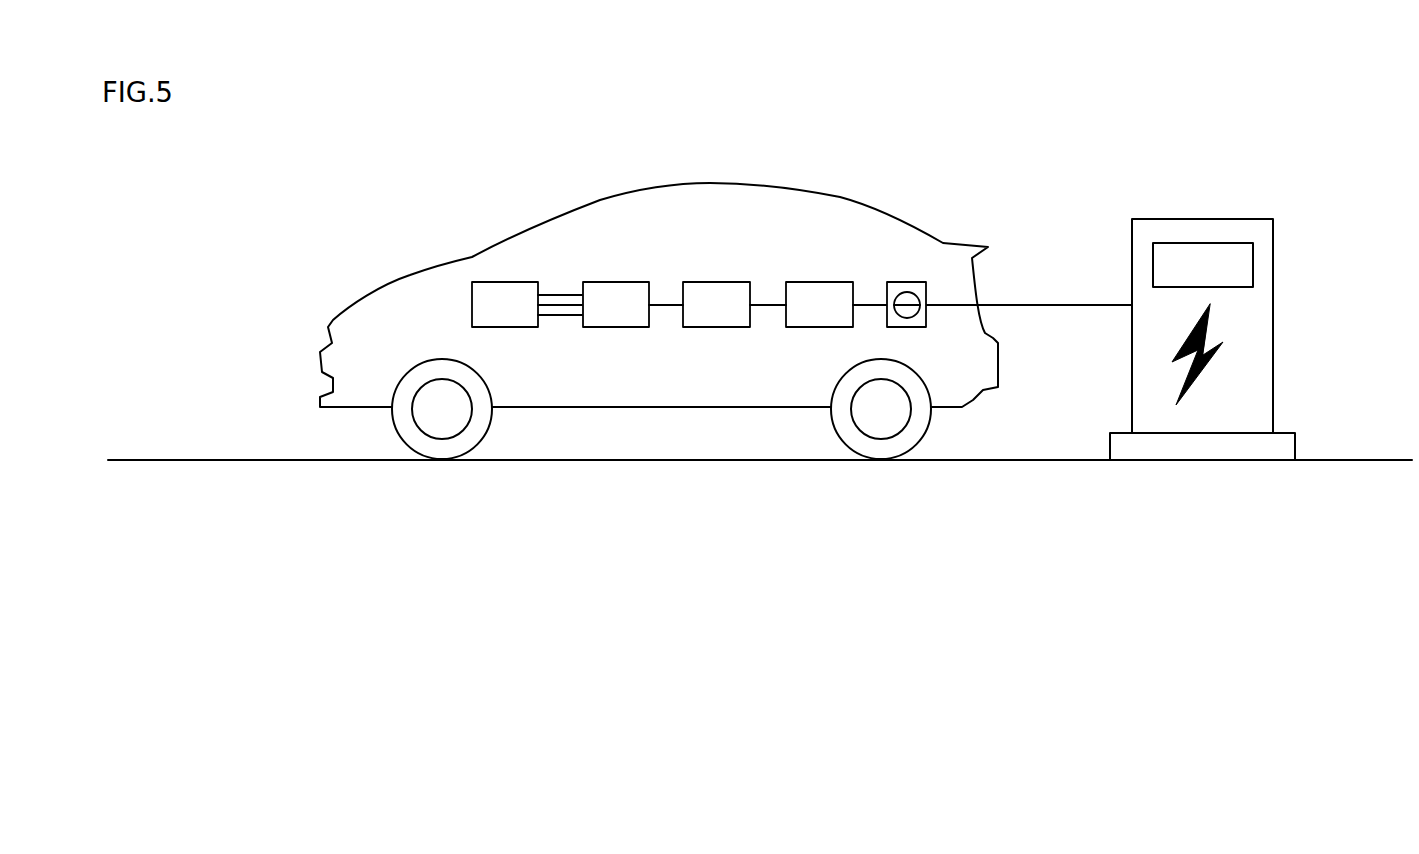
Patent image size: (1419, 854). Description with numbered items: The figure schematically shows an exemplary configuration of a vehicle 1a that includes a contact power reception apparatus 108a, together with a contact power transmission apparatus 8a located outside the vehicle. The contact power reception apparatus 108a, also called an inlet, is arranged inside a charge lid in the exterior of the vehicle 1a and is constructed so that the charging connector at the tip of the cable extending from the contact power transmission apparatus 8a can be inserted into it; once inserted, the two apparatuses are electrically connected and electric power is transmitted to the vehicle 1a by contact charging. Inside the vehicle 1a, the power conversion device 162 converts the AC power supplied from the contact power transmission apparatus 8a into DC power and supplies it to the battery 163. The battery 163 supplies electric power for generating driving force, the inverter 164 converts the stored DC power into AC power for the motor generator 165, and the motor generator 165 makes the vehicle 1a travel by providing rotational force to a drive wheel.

The vehicle 1a is at (882, 207).
The motor generator 165 is at (518, 281).
The inverter 164 is at (613, 281).
The battery 163 is at (716, 281).
The power conversion device 162 is at (818, 281).
The contact power reception apparatus 108a is at (907, 281).
The contact power transmission apparatus 8a is at (1247, 217).